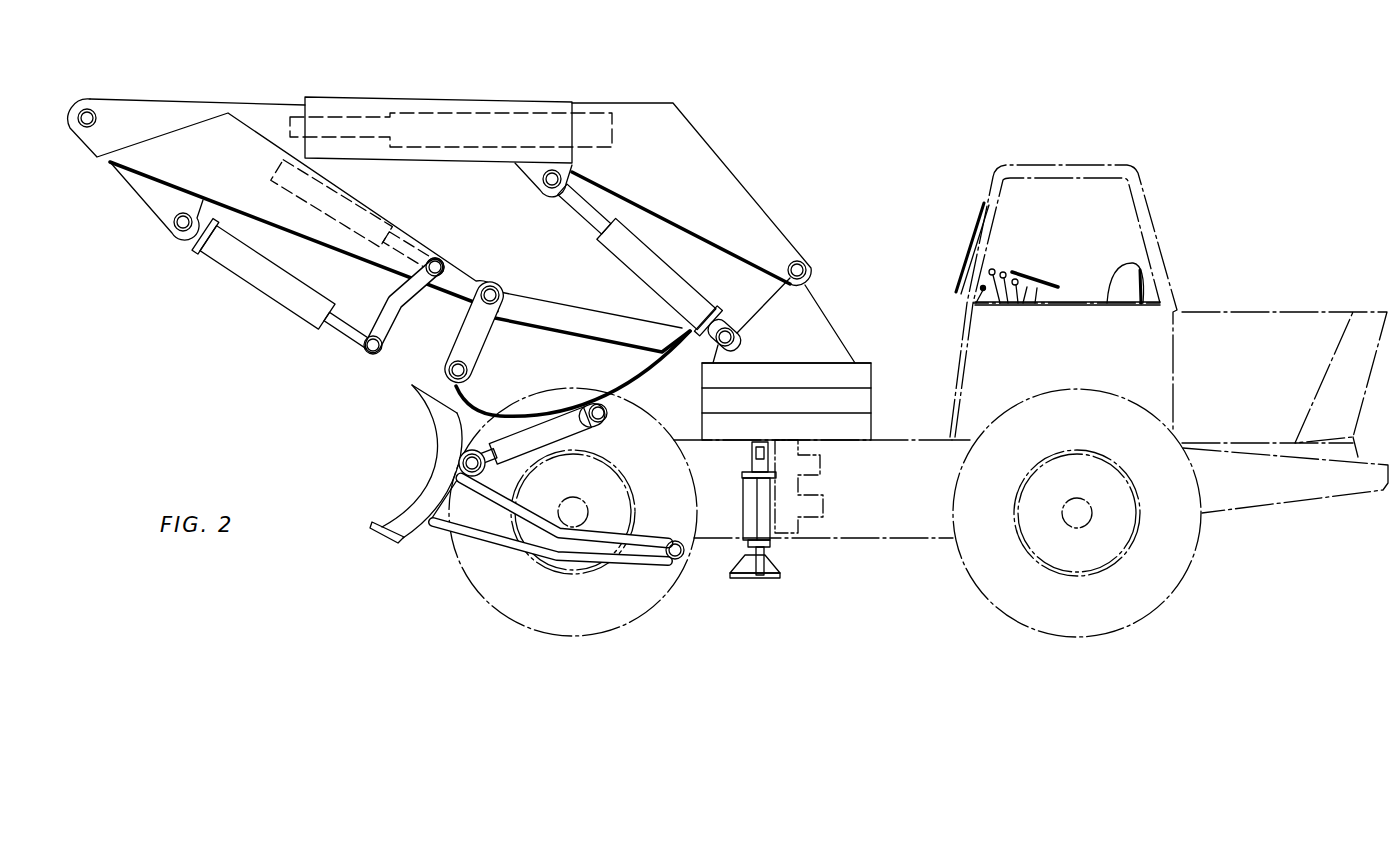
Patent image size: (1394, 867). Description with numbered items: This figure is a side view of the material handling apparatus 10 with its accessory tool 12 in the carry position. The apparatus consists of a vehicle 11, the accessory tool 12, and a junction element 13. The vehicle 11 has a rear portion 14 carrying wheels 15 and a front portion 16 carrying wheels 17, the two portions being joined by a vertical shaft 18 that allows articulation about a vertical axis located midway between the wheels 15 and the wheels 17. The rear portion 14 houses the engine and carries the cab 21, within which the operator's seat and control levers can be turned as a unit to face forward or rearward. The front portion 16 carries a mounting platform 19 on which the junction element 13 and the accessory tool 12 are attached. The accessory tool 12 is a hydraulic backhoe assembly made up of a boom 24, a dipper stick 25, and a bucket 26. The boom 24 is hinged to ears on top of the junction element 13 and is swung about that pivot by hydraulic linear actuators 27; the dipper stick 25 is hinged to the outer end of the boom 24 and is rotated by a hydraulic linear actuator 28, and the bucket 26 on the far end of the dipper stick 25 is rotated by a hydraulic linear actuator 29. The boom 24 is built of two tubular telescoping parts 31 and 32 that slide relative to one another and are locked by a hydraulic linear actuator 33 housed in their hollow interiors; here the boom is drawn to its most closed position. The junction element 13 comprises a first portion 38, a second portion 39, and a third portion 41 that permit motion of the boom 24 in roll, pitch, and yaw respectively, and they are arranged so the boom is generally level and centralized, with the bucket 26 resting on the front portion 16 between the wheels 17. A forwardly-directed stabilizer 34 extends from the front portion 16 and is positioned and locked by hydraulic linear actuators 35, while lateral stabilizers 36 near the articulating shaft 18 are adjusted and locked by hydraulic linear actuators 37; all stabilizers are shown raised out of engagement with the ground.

The material handling apparatus 10 is at (772, 208).
The vehicle 11 is at (1275, 312).
The accessory tool 12 is at (472, 100).
The junction element 13 is at (870, 378).
The rear portion 14 is at (1300, 493).
The wheels 15 is at (1185, 572).
The front portion 16 is at (897, 532).
The wheels 17 is at (488, 587).
The vertical shaft 18 is at (800, 520).
The mounting platform 19 is at (915, 440).
The cab 21 is at (1143, 202).
The boom 24 is at (378, 100).
The dipper stick 25 is at (412, 228).
The bucket 26 is at (555, 318).
The hydraulic linear actuators 27 is at (660, 270).
The hydraulic linear actuator 28 is at (340, 185).
The hydraulic linear actuator 29 is at (280, 305).
The tubular telescoping part 31 is at (262, 100).
The tubular telescoping part 32 is at (540, 102).
The hydraulic linear actuator 33 is at (336, 118).
The forwardly-directed stabilizer 34 is at (413, 510).
The hydraulic linear actuators 35 is at (578, 430).
The stabilizers 36 is at (775, 575).
The hydraulic linear actuators 37 is at (717, 500).
The first portion 38 is at (870, 425).
The second portion 39 is at (870, 400).
The third portion 41 is at (870, 365).